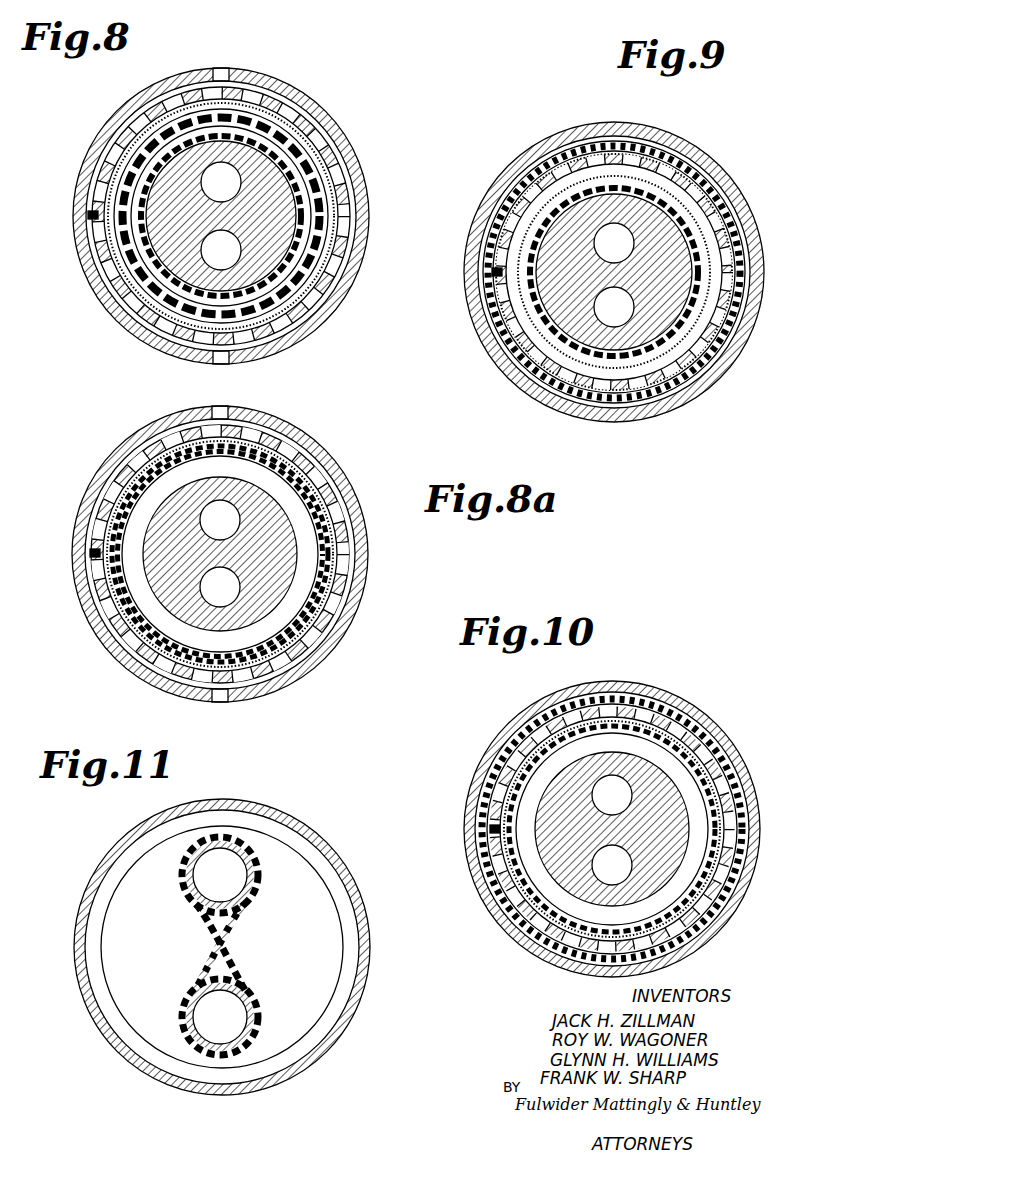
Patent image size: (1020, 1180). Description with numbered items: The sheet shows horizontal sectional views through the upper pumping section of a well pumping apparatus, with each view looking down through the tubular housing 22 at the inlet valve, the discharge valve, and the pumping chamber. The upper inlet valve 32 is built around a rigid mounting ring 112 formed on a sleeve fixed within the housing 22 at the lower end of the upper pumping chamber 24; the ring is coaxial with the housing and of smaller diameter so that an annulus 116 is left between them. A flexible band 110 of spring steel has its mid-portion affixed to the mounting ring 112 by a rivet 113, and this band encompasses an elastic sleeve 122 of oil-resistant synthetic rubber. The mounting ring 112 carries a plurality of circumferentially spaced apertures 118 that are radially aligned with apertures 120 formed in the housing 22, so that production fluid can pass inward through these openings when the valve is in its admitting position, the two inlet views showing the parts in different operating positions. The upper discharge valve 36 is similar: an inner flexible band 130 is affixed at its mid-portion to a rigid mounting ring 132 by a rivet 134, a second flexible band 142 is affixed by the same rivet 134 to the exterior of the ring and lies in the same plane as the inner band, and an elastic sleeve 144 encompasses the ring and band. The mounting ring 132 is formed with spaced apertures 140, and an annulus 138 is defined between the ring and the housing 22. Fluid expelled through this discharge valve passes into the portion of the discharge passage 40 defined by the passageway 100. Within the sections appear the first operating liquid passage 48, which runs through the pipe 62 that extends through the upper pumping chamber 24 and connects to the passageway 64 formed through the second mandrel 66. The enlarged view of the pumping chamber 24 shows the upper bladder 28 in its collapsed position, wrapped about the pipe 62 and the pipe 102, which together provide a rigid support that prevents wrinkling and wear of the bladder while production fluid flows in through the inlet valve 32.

In FIG. 8, the housing 22 is at (362, 212).
In FIG. 8A, the housing 22 is at (220, 554).
In FIG. 9, the housing 22 is at (668, 137).
In FIG. 10, the housing 22 is at (517, 944).
In FIG. 11, the housing 22 is at (366, 978).
In FIG. 8, the upper pumping chamber 24 is at (282, 303).
In FIG. 11, the upper pumping chamber 24 is at (222, 947).
In FIG. 8, the upper bladder 28 is at (146, 258).
In FIG. 8A, the upper bladder 28 is at (98, 590).
In FIG. 9, the upper bladder 28 is at (586, 190).
In FIG. 10, the upper bladder 28 is at (655, 705).
In FIG. 11, the upper bladder 28 is at (212, 956).
In FIG. 8, the upper inlet valve 32 is at (292, 126).
In FIG. 8A, the upper inlet valve 32 is at (255, 455).
In FIG. 9, the upper discharge valve 36 is at (556, 175).
In FIG. 10, the upper discharge valve 36 is at (688, 752).
In FIG. 8, the discharge passage 40 is at (221, 250).
In FIG. 8A, the discharge passage 40 is at (220, 587).
In FIG. 9, the discharge passage 40 is at (614, 307).
In FIG. 10, the discharge passage 40 is at (612, 865).
In FIG. 11, the discharge passage 40 is at (220, 1017).
In FIG. 8, the first operating liquid passage 48 is at (221, 182).
In FIG. 8A, the first operating liquid passage 48 is at (220, 520).
In FIG. 9, the first operating liquid passage 48 is at (614, 243).
In FIG. 10, the first operating liquid passage 48 is at (612, 795).
In FIG. 11, the first operating liquid passage 48 is at (220, 875).
In FIG. 11, the pipe 62 is at (262, 862).
In FIG. 8, the passageway 64 is at (240, 172).
In FIG. 8A, the passageway 64 is at (240, 512).
In FIG. 9, the passageway 64 is at (624, 223).
In FIG. 8, the second mandrel 66 is at (290, 202).
In FIG. 8A, the second mandrel 66 is at (295, 550).
In FIG. 9, the second mandrel 66 is at (676, 247).
In FIG. 10, the second mandrel 66 is at (676, 796).
In FIG. 8, the passageway 100 is at (240, 258).
In FIG. 8A, the passageway 100 is at (240, 598).
In FIG. 9, the passageway 100 is at (624, 320).
In FIG. 11, the pipe 102 is at (238, 1068).
In FIG. 8, the flexible band 110 is at (320, 283).
In FIG. 8A, the flexible band 110 is at (305, 640).
In FIG. 8, the mounting ring 112 is at (105, 246).
In FIG. 8, the rivet 113 is at (90, 214).
In FIG. 8A, the rivet 113 is at (95, 555).
In FIG. 8, the annulus 116 is at (122, 318).
In FIG. 8A, the annulus 116 is at (125, 640).
In FIG. 8, the apertures 118 is at (265, 112).
In FIG. 8A, the apertures 118 is at (285, 446).
In FIG. 8, the apertures 120 is at (225, 68).
In FIG. 8A, the apertures 120 is at (190, 415).
In FIG. 8, the elastic sleeve 122 is at (130, 165).
In FIG. 8A, the elastic sleeve 122 is at (120, 625).
In FIG. 9, the flexible band 130 is at (522, 362).
In FIG. 10, the flexible band 130 is at (712, 742).
In FIG. 9, the mounting ring 132 is at (492, 330).
In FIG. 9, the rivet 134 is at (497, 280).
In FIG. 10, the rivet 134 is at (494, 829).
In FIG. 9, the annulus 138 is at (683, 162).
In FIG. 10, the annulus 138 is at (660, 945).
In FIG. 9, the apertures 140 is at (608, 152).
In FIG. 10, the apertures 140 is at (612, 712).
In FIG. 9, the second flexible band 142 is at (604, 400).
In FIG. 9, the elastic sleeve 144 is at (648, 398).
In FIG. 10, the elastic sleeve 144 is at (621, 710).